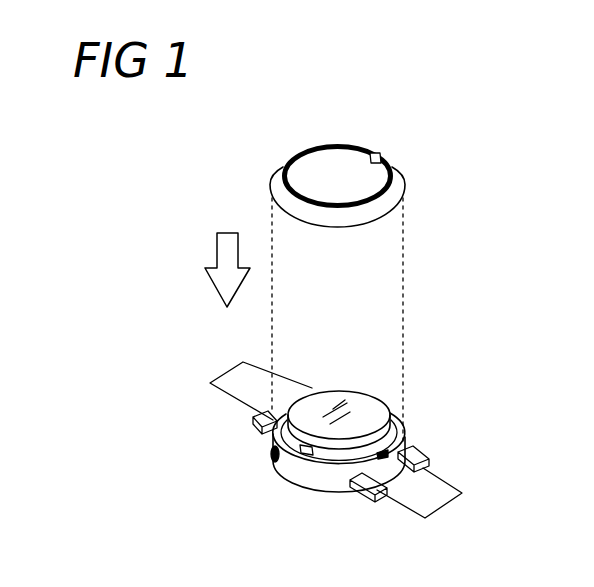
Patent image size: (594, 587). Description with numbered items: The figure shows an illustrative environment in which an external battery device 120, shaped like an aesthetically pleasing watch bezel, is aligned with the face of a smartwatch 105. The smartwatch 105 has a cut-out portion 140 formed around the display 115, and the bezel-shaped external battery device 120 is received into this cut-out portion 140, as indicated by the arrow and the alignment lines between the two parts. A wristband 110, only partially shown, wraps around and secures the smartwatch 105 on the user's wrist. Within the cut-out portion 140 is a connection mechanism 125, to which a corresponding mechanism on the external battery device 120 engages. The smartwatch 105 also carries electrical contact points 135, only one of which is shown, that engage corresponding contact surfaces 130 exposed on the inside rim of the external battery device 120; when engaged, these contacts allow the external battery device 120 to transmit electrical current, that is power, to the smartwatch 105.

The smartwatch 105 is at (268, 500).
The wristband 110 is at (462, 493).
The display 115 is at (368, 409).
The external battery device 120 is at (404, 180).
The connection mechanism 125 is at (404, 451).
The contact surfaces 130 is at (377, 156).
The electrical contact points 135 is at (310, 452).
The cut-out portion 140 is at (281, 430).